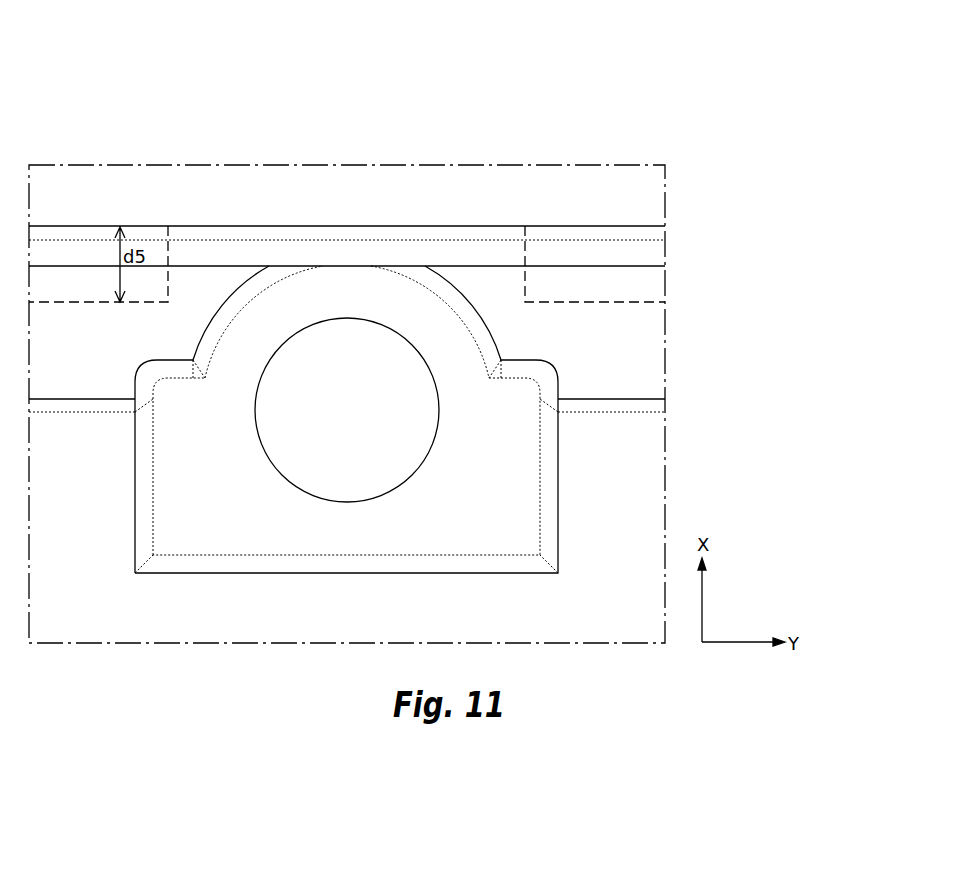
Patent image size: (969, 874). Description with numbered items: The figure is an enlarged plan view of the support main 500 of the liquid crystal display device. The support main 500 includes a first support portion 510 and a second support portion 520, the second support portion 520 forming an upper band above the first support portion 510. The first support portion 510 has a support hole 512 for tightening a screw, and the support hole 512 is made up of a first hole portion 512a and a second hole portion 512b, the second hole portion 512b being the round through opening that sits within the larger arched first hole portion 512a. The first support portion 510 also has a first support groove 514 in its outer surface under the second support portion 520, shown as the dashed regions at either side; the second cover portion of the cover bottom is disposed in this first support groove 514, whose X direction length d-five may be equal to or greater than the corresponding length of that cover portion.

The support main 500 is at (808, 272).
The first support portion 510 is at (642, 348).
The second support portion 520 is at (642, 253).
The support hole 512 is at (405, 55).
The first hole portion 512a is at (403, 309).
The second hole portion 512b is at (330, 376).
The first support groove 514 is at (71, 284).